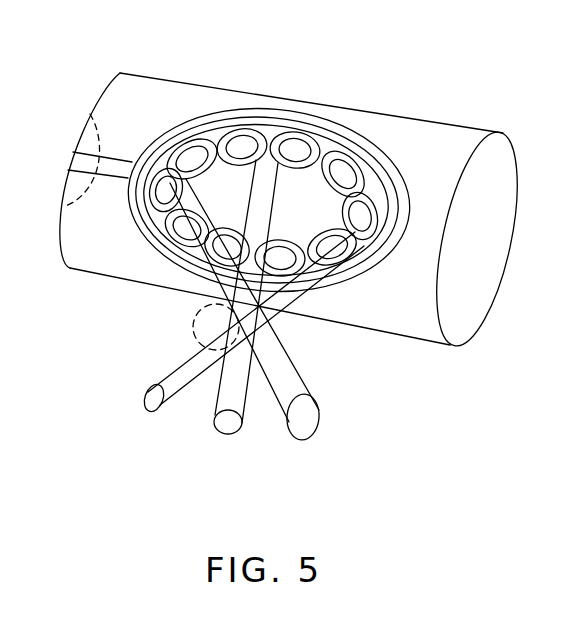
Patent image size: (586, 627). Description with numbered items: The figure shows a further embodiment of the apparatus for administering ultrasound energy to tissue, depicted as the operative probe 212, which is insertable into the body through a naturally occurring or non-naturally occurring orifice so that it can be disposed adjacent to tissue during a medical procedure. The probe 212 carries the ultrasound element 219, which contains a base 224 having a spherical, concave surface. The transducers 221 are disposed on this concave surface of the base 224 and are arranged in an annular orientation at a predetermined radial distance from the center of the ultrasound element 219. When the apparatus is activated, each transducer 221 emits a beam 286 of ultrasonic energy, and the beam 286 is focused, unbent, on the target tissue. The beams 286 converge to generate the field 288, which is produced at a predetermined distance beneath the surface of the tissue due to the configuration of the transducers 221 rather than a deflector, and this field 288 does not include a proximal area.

The operative probe 212 is at (504, 118).
The ultrasound element 219 is at (406, 168).
The base 224 is at (382, 162).
The transducers 221 is at (298, 278).
The beam 286 is at (310, 387).
The field 288 is at (175, 323).